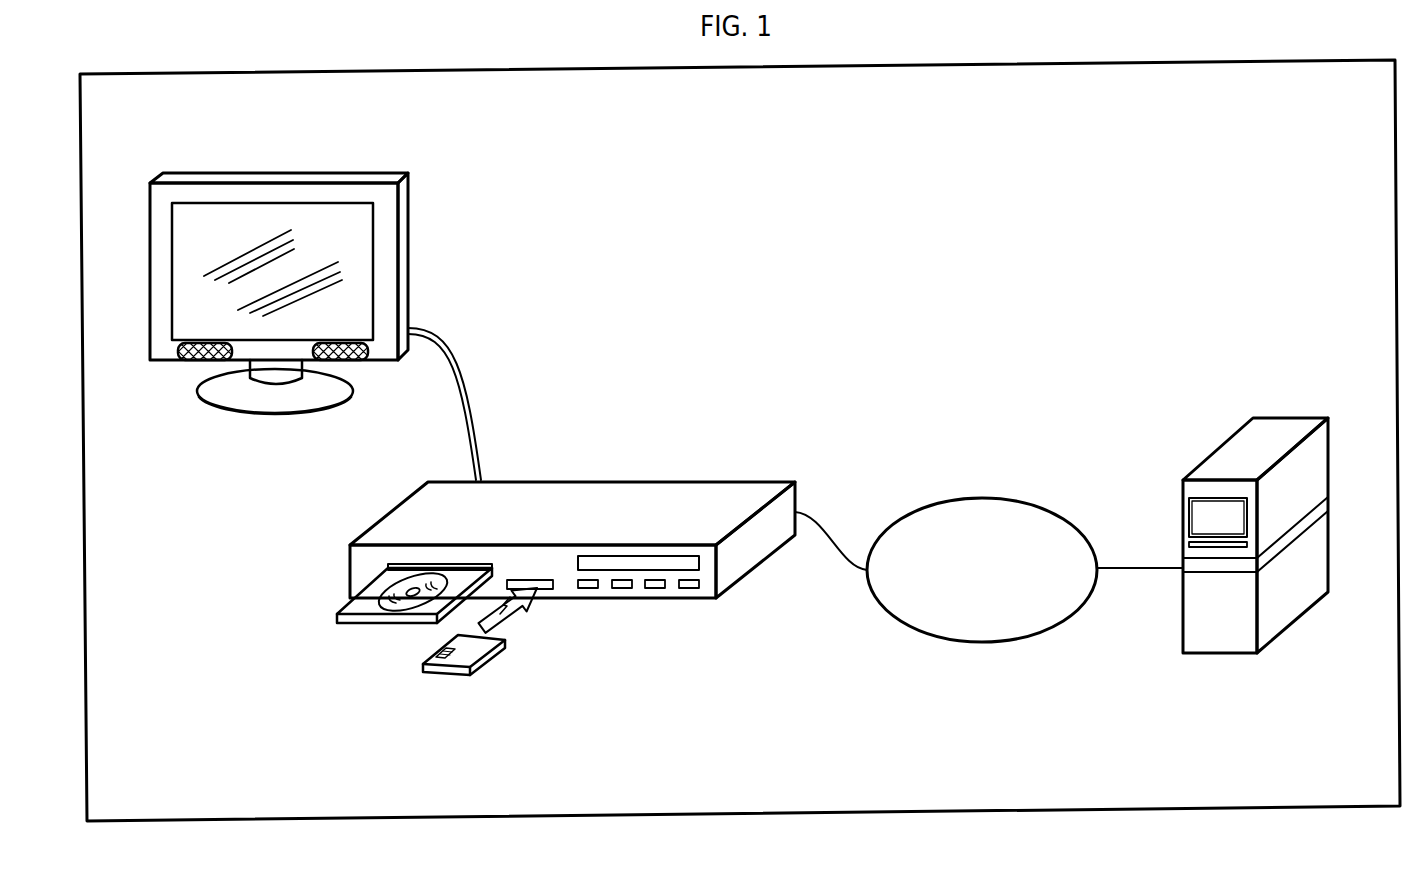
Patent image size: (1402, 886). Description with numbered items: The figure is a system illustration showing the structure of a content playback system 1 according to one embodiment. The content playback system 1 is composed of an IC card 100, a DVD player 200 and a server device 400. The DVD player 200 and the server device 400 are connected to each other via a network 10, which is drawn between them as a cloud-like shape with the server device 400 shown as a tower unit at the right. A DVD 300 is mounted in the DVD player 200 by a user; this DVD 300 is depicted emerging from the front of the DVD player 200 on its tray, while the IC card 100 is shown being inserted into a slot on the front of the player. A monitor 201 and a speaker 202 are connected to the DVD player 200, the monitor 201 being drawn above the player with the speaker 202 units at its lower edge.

The content playback system 1 is at (1222, 60).
The network 10 is at (981, 497).
The IC card 100 is at (499, 647).
The DVD player 200 is at (795, 482).
The monitor 201 is at (302, 309).
The speaker 202 is at (185, 362).
The DVD 300 is at (366, 622).
The server device 400 is at (1287, 416).